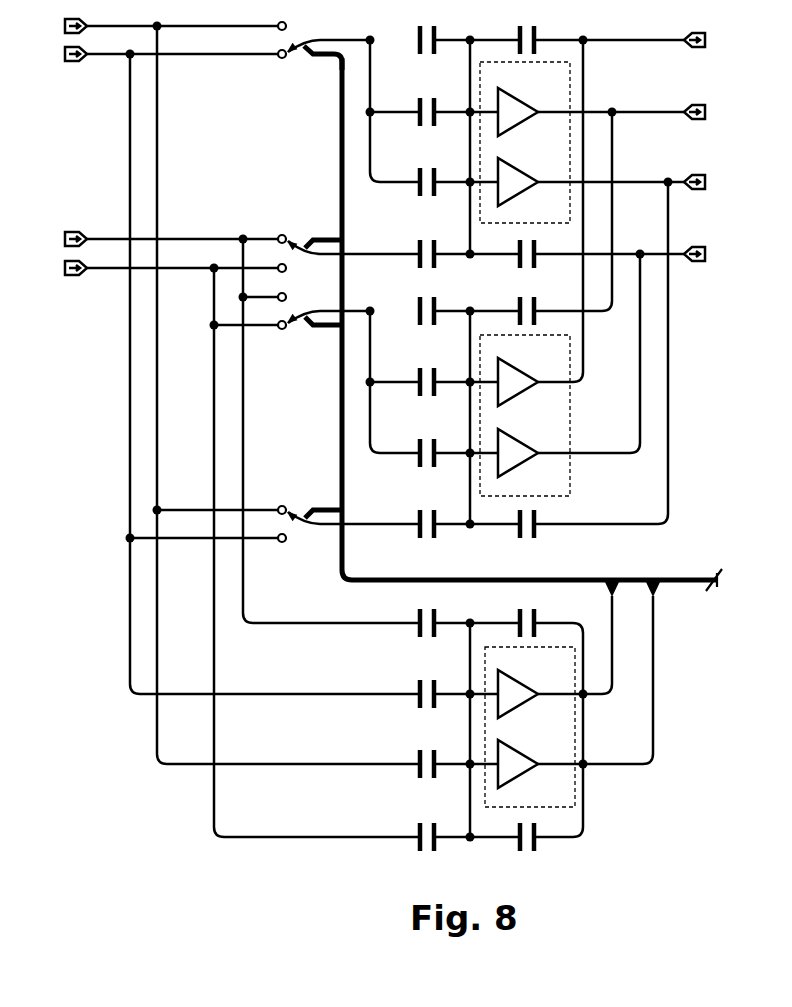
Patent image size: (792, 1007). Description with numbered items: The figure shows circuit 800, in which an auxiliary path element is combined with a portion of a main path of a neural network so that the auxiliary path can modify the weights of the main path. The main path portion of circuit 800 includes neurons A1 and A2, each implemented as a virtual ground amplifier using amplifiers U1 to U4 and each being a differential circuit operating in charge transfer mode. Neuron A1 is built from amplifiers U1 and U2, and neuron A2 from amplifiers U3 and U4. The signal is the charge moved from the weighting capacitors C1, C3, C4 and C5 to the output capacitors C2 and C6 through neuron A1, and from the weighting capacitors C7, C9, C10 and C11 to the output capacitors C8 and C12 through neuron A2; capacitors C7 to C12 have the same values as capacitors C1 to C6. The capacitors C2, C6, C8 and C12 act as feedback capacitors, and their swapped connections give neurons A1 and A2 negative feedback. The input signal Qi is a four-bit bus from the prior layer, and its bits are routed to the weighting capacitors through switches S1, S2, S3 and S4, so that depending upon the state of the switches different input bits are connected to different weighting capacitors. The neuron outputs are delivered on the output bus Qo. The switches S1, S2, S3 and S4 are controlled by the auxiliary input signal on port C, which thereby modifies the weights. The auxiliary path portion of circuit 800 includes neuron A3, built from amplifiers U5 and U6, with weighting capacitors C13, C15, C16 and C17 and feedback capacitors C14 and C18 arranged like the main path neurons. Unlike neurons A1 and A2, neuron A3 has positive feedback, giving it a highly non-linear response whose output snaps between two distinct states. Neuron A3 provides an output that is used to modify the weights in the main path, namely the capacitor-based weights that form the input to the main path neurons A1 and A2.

The circuit 800 is at (734, 737).
The switch S1 is at (324, 54).
The switch S2 is at (349, 243).
The switch S3 is at (324, 324).
The switch S4 is at (349, 513).
The auxiliary input signal port C is at (542, 332).
The weighting capacitor C1 is at (456, 35).
The output capacitor C2 is at (589, 35).
The weighting capacitor C3 is at (445, 107).
The weighting capacitor C4 is at (445, 177).
The weighting capacitor C5 is at (456, 249).
The output capacitor C6 is at (589, 249).
The weighting capacitor C7 is at (456, 306).
The output capacitor C8 is at (553, 218).
The weighting capacitor C9 is at (445, 377).
The weighting capacitor C10 is at (441, 448).
The weighting capacitor C11 is at (452, 519).
The output capacitor C12 is at (578, 360).
The weighting capacitor C13 is at (452, 618).
The feedback capacitor C14 is at (535, 618).
The weighting capacitor C15 is at (441, 689).
The weighting capacitor C16 is at (441, 759).
The weighting capacitor C17 is at (452, 832).
The feedback capacitor C18 is at (535, 832).
The neuron A1 is at (582, 142).
The neuron A2 is at (560, 268).
The neuron A3 is at (569, 701).
The amplifier U1 is at (591, 107).
The amplifier U2 is at (591, 189).
The amplifier U3 is at (540, 223).
The amplifier U4 is at (569, 373).
The amplifier U5 is at (555, 657).
The amplifier U6 is at (575, 700).
The input signal Qi is at (217, 427).
The output signal Qo is at (672, 148).